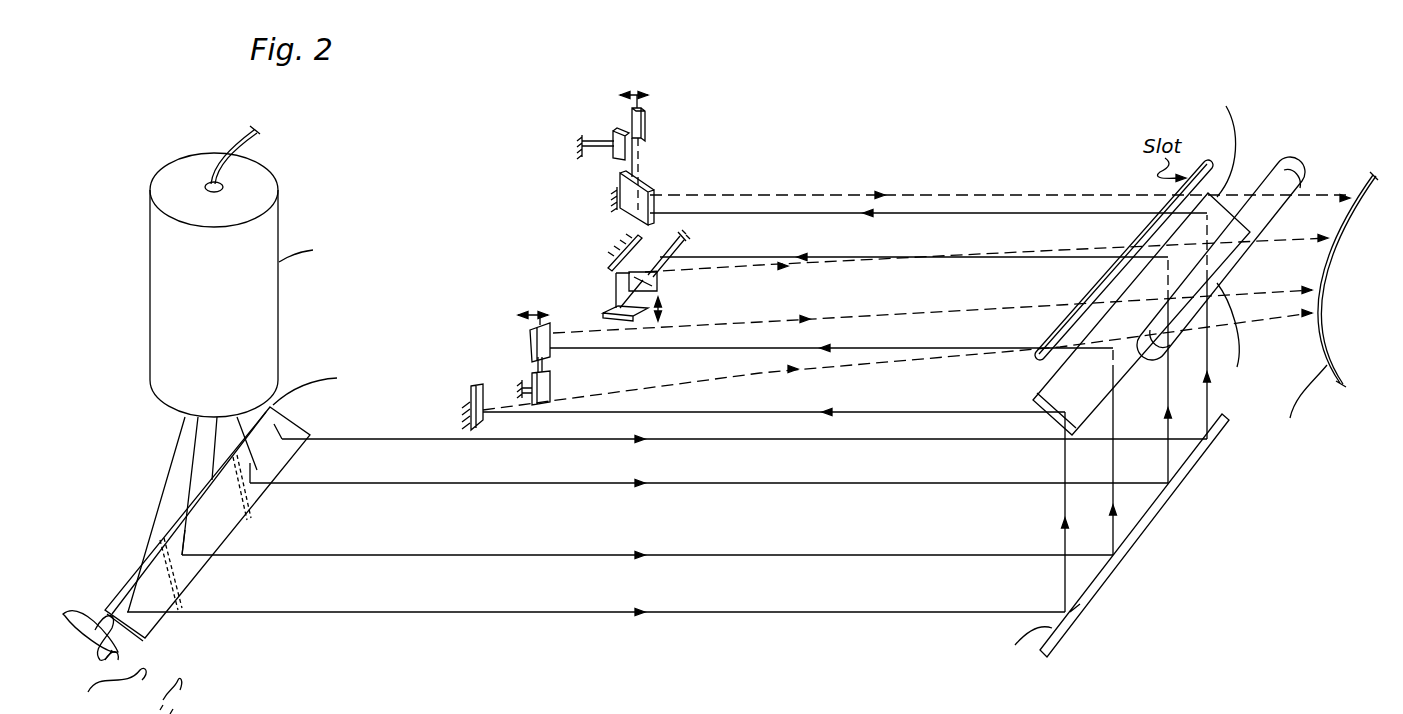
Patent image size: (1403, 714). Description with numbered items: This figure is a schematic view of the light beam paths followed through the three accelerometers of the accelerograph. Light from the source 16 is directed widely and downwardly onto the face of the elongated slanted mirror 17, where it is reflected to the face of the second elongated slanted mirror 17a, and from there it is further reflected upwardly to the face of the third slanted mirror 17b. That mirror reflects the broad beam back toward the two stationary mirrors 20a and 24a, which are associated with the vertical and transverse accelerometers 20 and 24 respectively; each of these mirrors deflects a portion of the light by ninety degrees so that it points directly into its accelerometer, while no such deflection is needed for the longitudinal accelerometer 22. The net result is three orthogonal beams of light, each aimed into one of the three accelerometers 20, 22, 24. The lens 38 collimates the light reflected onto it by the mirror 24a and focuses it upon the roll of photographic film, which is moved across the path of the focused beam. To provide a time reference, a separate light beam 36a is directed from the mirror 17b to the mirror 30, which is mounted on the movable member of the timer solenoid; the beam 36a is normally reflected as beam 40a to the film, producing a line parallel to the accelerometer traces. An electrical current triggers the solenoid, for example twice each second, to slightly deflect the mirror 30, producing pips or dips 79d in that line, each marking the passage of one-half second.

The light source 16 is at (259, 271).
The elongated slanted mirror 17 is at (128, 582).
The second elongated slanted mirror 17a is at (1138, 538).
The third slanted mirror 17b is at (1043, 377).
The accelerometer 20 is at (665, 296).
The stationary mirror 20a is at (608, 263).
The accelerometer 22 is at (519, 364).
The accelerometer 24 is at (657, 119).
The first stationary mirror 24a is at (648, 189).
The mirror 30 is at (488, 387).
The light beam 36a is at (753, 412).
The lens 38 is at (1283, 168).
The beam 40a is at (768, 373).
The pips or dips 79d is at (1317, 298).